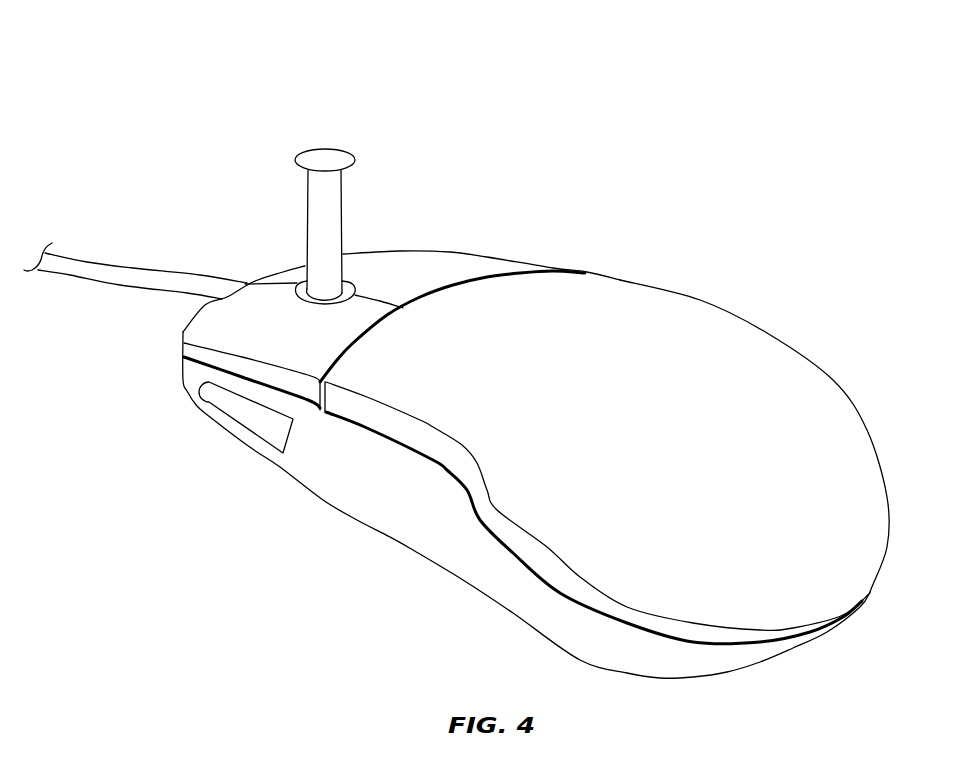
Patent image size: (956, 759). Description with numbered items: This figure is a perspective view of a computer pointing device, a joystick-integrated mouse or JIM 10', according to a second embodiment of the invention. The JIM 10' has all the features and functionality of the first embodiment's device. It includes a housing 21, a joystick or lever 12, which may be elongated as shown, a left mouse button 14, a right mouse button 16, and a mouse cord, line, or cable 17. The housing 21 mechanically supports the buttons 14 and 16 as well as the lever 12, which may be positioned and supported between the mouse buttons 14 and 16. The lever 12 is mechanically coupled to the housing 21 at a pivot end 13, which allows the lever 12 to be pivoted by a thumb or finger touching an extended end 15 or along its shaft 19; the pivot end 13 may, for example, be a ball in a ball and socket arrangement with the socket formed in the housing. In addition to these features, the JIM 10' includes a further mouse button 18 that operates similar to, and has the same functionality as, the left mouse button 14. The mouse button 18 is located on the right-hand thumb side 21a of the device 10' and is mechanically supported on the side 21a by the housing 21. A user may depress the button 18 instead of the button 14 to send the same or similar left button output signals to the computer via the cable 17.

The JIM 10' is at (526, 352).
The joystick or lever 12 is at (340, 210).
The pivot end 13 is at (320, 288).
The button 14 is at (230, 337).
The extended end 15 is at (320, 160).
The button 16 is at (435, 258).
The mouse cord, line, or cable 17 is at (147, 268).
The mouse button 18 is at (223, 402).
The shaft 19 is at (320, 228).
The housing 21 is at (690, 335).
The right-hand thumb side 21a is at (430, 517).